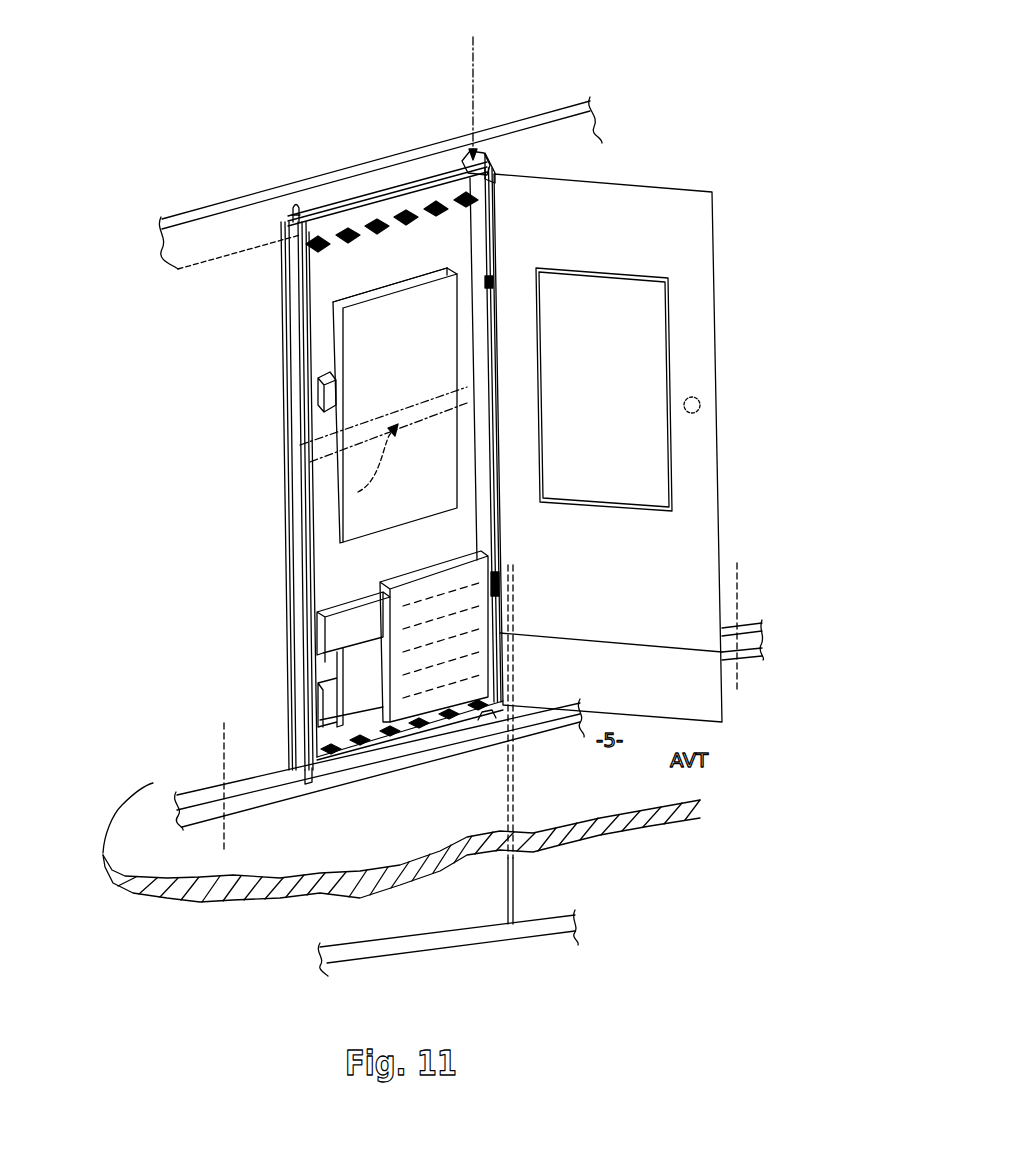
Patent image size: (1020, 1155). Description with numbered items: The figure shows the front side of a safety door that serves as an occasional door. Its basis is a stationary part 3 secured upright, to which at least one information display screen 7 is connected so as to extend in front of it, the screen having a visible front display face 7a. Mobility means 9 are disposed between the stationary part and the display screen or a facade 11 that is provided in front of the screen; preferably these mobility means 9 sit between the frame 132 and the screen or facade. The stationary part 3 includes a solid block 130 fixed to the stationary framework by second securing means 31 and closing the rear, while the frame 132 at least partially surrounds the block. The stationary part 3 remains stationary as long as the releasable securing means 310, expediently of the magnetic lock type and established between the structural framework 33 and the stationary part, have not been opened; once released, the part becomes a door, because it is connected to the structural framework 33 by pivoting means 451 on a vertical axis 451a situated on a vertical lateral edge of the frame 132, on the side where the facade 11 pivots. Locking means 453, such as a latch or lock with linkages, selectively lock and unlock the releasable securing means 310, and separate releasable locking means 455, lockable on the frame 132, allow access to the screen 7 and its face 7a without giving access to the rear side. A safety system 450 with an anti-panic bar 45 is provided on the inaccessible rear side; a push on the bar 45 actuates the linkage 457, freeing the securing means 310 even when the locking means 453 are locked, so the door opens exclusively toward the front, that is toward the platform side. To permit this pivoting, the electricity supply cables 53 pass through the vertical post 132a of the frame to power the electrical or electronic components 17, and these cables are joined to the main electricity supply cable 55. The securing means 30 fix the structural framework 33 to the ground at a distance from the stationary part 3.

The stationary part 3 is at (369, 466).
The information display screen 7 is at (388, 350).
The front display face 7a is at (372, 323).
The mobility means 9 is at (500, 282).
The facade 11 is at (652, 240).
The electrical or electronic components 17 is at (345, 630).
The securing means 30 is at (737, 590).
The second securing means 31 is at (283, 708).
The structural framework 33 is at (205, 247).
The anti-panic bar 45 is at (300, 458).
The electricity supply cables 53 is at (513, 787).
The main electricity supply cable 55 is at (570, 917).
The solid block 130 is at (440, 249).
The frame 132 is at (298, 550).
The vertical post 132a is at (495, 172).
The releasable securing means 310 is at (282, 212).
The safety system 450 is at (367, 480).
The pivoting means 451 is at (466, 160).
The vertical axis 451a is at (478, 57).
The locking means 453 is at (320, 378).
The releasable locking means 455 is at (690, 397).
The linkage 457 is at (292, 512).